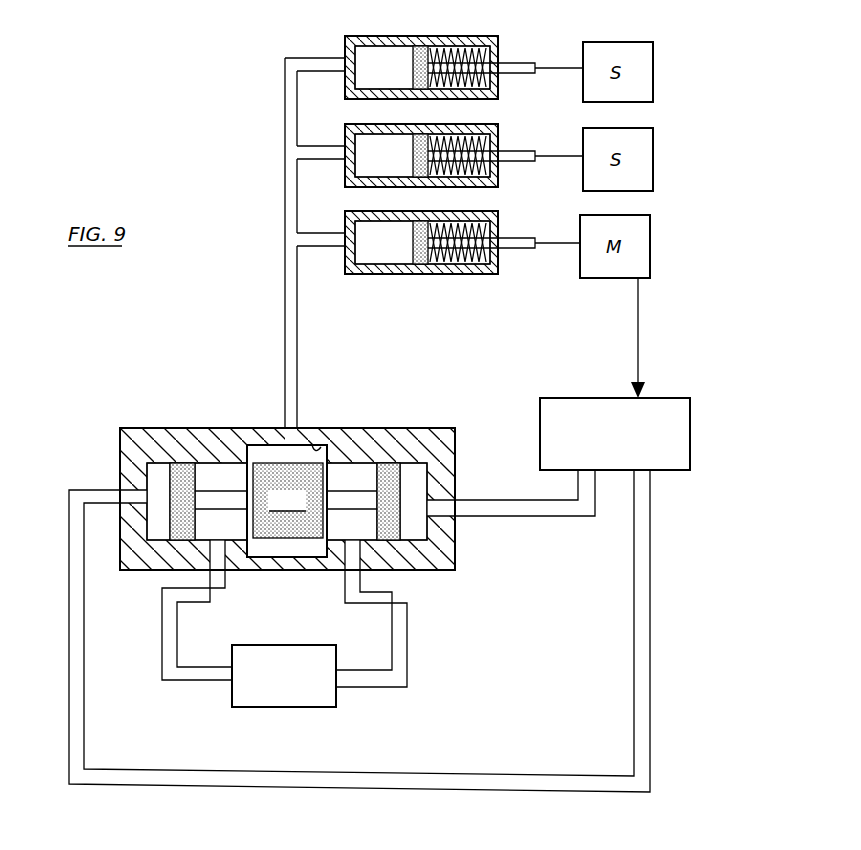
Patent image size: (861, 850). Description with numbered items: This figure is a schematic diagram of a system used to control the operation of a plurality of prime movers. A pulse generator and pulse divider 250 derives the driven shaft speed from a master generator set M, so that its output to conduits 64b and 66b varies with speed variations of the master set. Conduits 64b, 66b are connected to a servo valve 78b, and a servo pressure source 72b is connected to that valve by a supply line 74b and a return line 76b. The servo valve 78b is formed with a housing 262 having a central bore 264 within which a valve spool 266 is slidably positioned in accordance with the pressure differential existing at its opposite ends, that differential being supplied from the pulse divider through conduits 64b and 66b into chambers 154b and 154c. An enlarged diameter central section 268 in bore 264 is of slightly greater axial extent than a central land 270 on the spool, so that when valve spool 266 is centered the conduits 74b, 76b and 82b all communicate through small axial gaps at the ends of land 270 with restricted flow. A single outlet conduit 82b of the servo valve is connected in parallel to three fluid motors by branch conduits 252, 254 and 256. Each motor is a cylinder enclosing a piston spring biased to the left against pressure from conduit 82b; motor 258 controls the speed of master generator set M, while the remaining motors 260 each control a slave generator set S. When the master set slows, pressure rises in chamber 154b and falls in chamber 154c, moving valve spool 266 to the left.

The branch conduit 256 is at (311, 57).
The branch conduit 254 is at (322, 146).
The branch conduit 252 is at (320, 233).
The motors 260 is at (503, 97).
The motor 258 is at (397, 278).
The pulse generator and pulse divider 250 is at (566, 384).
The outlet conduit 82b is at (298, 366).
The housing 262 is at (431, 440).
The central bore 264 is at (207, 463).
The enlarged diameter central section 268 is at (322, 445).
The central land 270 is at (286, 501).
The valve spool 266 is at (202, 512).
The chamber 154c is at (158, 480).
The chamber 154b is at (415, 532).
The conduit 66b is at (68, 535).
The conduit 64b is at (495, 516).
The supply line 74b is at (400, 630).
The return line 76b is at (170, 625).
The servo valve 78b is at (288, 570).
The servo pressure source 72b is at (285, 707).